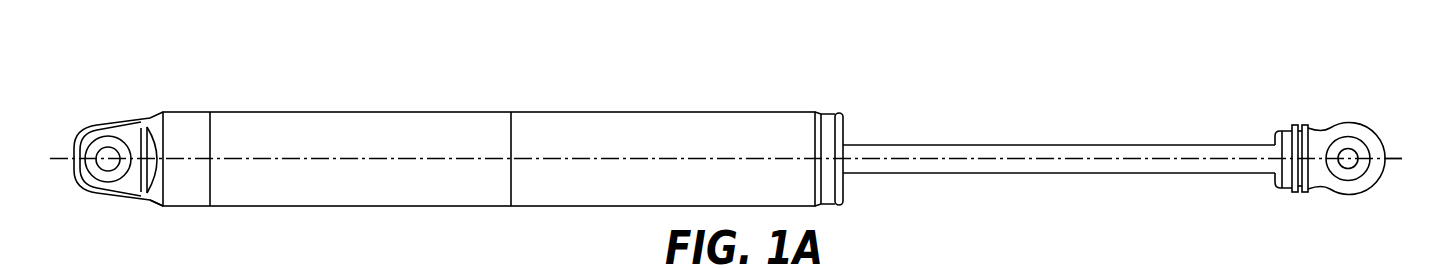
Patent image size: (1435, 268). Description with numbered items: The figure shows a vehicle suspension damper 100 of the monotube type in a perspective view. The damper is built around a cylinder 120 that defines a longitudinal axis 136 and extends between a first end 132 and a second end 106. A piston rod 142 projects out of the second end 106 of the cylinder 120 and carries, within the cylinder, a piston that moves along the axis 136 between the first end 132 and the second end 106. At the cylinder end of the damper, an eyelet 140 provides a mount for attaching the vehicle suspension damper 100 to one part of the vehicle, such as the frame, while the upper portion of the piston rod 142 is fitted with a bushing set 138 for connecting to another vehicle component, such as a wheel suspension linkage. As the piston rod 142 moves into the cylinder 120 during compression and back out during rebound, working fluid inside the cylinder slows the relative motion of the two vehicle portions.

The vehicle suspension damper 100 is at (290, 68).
The eyelet 140 is at (103, 123).
The first end 132 is at (151, 207).
The cylinder 120 is at (498, 112).
The second end 106 is at (818, 112).
The piston rod 142 is at (1048, 174).
The bushing set 138 is at (1348, 122).
The axis 136 is at (1393, 160).